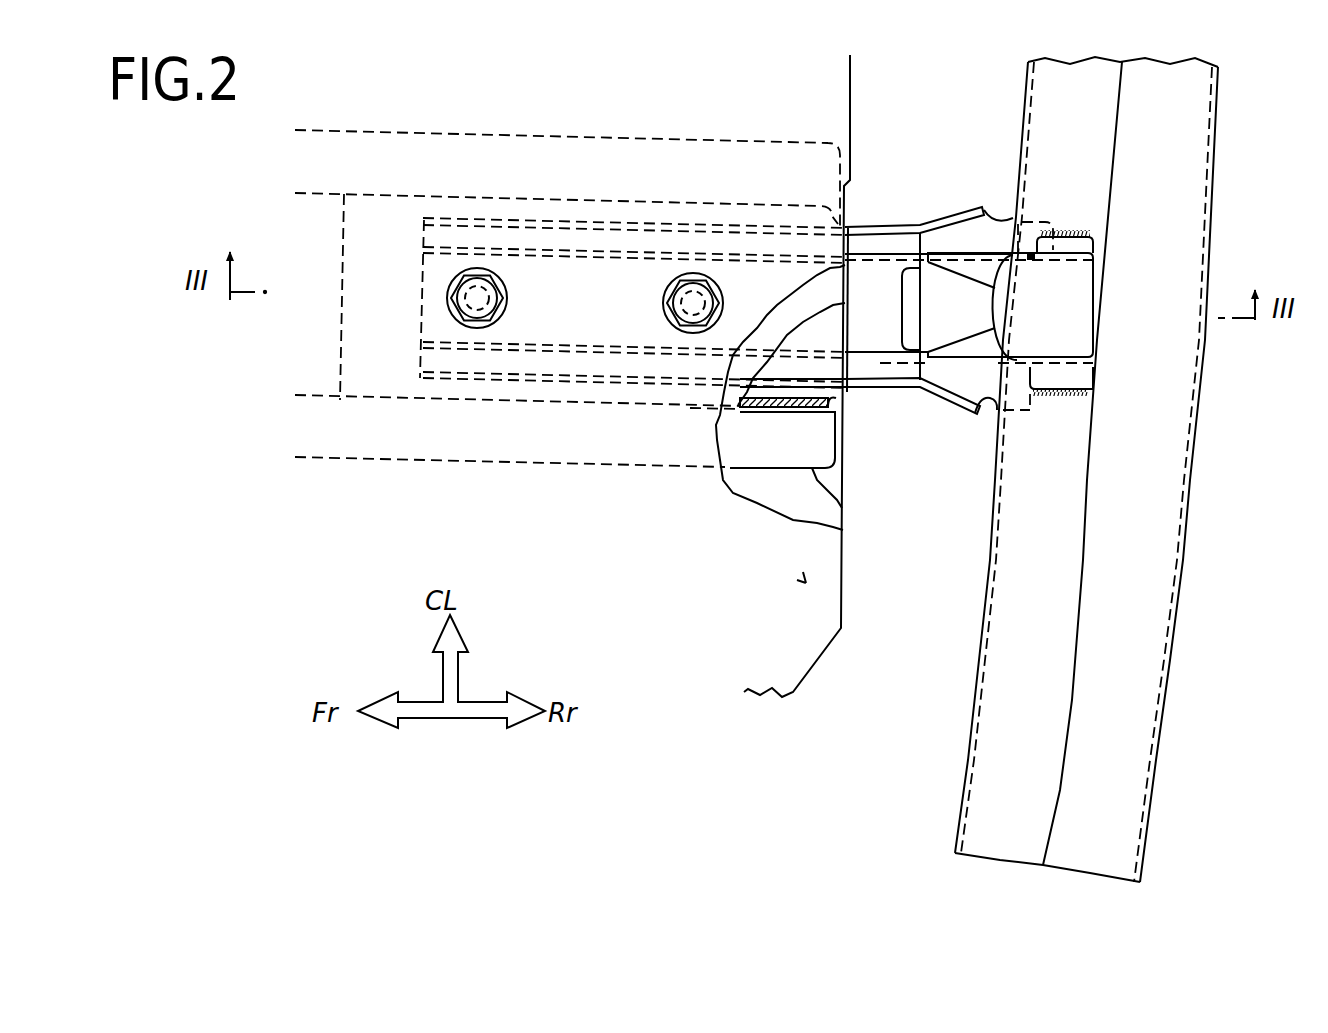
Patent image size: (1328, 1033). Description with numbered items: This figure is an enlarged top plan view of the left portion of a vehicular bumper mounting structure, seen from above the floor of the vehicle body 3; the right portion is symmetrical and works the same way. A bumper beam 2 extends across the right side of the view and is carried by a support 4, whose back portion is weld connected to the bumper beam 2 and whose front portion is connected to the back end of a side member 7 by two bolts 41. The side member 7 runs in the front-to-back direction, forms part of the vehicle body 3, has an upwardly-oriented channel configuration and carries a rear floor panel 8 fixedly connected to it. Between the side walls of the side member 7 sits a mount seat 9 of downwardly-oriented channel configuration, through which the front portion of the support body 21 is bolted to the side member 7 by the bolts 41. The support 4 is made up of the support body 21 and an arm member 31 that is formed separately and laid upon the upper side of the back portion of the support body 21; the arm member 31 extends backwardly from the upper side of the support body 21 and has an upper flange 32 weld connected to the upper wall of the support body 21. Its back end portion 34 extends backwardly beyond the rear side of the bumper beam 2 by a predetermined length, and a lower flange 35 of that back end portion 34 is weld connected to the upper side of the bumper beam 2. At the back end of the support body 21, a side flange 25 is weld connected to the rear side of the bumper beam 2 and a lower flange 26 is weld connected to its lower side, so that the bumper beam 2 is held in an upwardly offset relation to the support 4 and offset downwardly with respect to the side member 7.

The bumper beam 2 is at (1180, 560).
The vehicle body 3 is at (855, 96).
The support 4 is at (1007, 160).
The side member 7 is at (841, 506).
The rear floor panel 8 is at (806, 583).
The mount seat 9 is at (802, 408).
The support body 21 is at (893, 221).
The side flange 25 is at (988, 406).
The lower flange 26 is at (1030, 410).
The arm member 31 is at (1026, 285).
The upper flange 32 is at (908, 318).
The back end portion 34 is at (1097, 307).
The lower flange 35 is at (1083, 378).
The bolts 41 is at (483, 278).